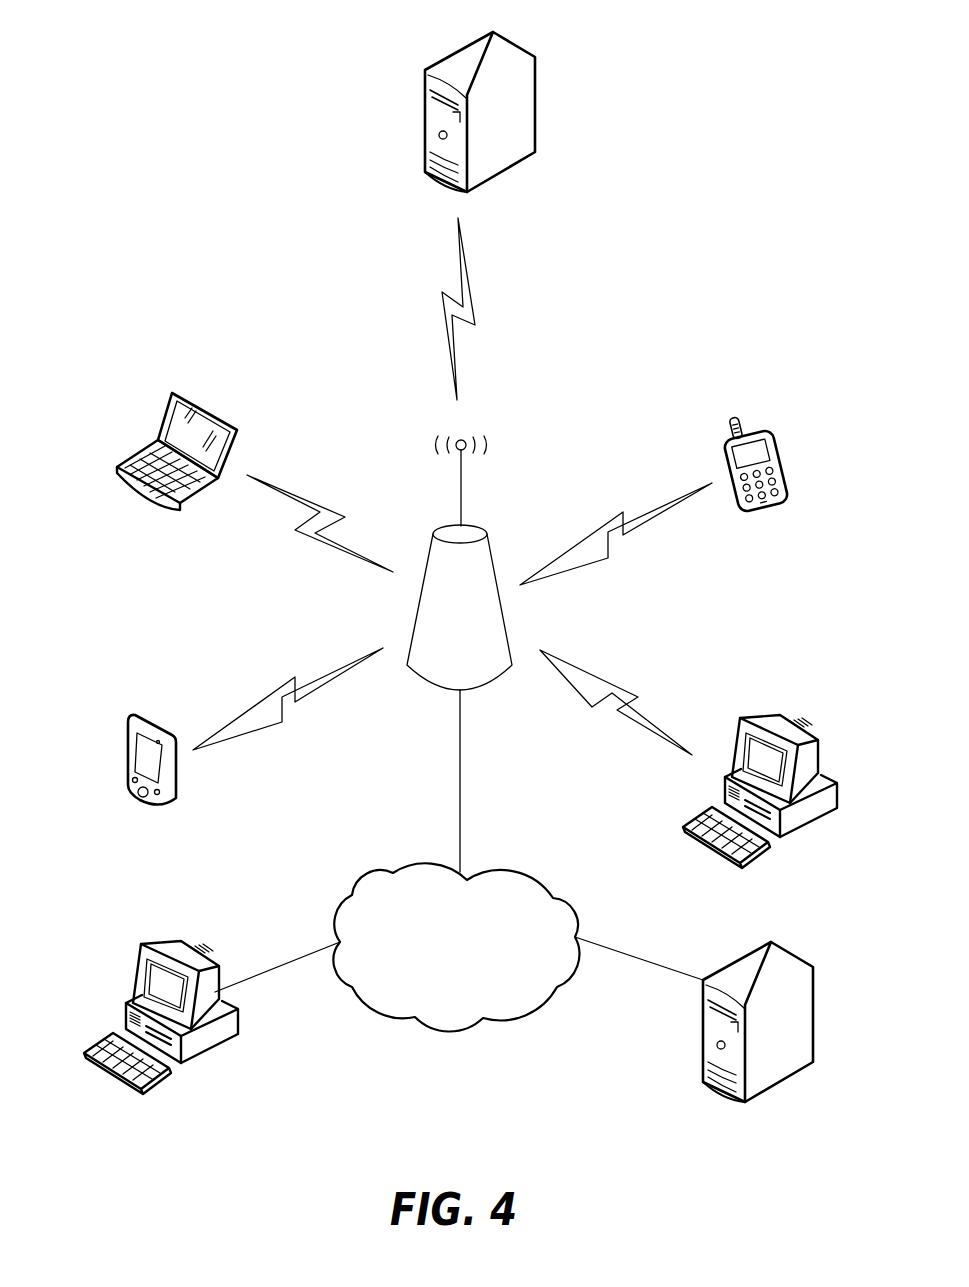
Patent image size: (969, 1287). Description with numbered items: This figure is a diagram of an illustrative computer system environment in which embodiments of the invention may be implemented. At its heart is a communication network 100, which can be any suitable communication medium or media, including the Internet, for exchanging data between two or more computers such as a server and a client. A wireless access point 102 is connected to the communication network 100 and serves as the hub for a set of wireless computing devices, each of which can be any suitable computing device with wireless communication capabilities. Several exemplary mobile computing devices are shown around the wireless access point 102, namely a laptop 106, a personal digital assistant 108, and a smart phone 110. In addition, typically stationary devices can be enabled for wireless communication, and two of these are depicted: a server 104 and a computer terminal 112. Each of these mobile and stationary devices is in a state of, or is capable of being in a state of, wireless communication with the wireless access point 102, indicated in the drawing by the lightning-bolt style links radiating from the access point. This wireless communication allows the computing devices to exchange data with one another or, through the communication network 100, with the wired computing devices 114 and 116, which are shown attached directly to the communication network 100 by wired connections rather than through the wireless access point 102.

The communication network 100 is at (393, 873).
The wireless access point 102 is at (468, 428).
The server 104 is at (462, 45).
The laptop 106 is at (172, 393).
The personal digital assistant 108 is at (130, 727).
The smart phone 110 is at (767, 432).
The computer terminal 112 is at (745, 717).
The wired computing device 114 is at (140, 943).
The wired computing device 116 is at (782, 950).